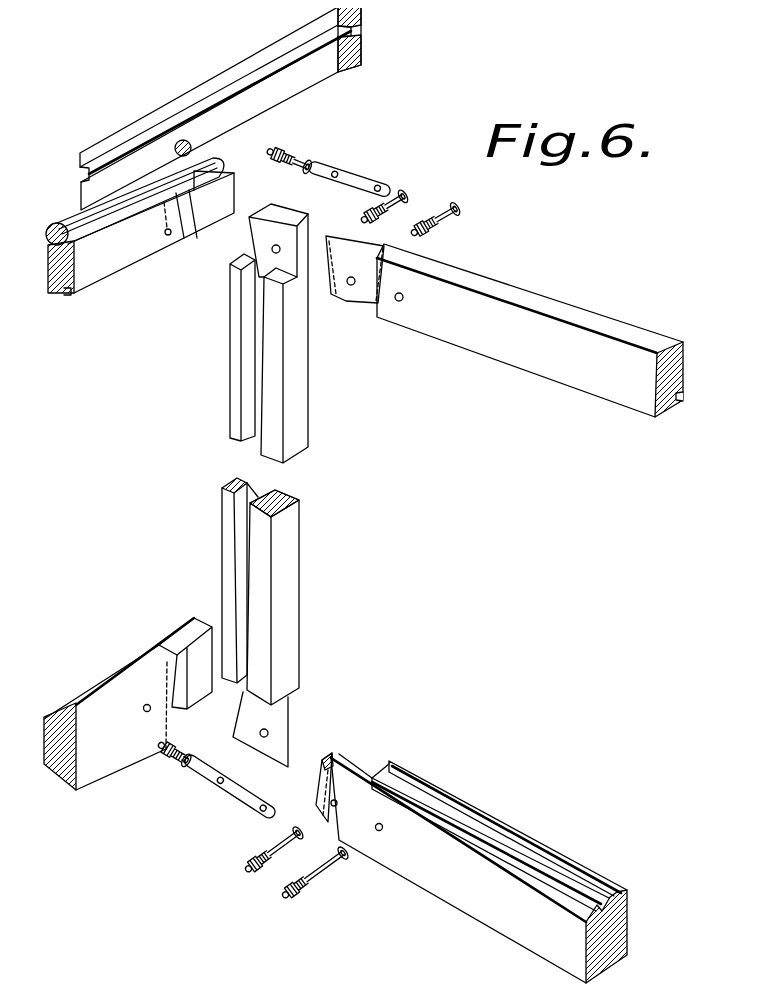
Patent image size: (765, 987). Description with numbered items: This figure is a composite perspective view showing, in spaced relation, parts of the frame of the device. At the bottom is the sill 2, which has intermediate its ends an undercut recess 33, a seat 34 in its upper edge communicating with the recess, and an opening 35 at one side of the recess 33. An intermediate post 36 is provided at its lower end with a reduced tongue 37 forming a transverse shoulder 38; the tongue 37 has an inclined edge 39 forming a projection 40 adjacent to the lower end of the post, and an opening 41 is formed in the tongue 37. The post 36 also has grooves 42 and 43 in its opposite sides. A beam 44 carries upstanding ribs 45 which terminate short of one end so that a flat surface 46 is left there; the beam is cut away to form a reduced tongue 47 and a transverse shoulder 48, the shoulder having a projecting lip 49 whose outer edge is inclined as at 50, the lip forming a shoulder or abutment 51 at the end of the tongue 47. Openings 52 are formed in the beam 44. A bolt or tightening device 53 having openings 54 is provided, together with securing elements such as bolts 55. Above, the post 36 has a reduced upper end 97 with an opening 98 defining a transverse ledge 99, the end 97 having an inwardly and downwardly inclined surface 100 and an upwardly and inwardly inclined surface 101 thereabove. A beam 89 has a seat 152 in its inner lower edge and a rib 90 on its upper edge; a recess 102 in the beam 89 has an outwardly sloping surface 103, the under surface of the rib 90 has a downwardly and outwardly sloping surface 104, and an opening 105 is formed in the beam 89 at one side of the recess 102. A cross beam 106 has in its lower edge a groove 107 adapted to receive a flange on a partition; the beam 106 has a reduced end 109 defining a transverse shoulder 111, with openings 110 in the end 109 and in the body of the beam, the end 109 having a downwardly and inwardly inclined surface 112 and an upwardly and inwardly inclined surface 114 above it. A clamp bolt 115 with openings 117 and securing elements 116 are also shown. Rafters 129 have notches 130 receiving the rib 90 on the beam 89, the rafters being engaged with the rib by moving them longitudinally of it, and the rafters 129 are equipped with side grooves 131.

The sill 2 is at (80, 699).
The undercut recess 33 is at (171, 707).
The seat 34 is at (170, 647).
The opening 35 is at (145, 713).
The intermediate post 36 is at (289, 438).
The reduced tongue 37 is at (320, 716).
The transverse shoulder 38 is at (285, 698).
The inclined edge 39 is at (231, 724).
The projection 40 is at (237, 680).
The opening 41 is at (263, 738).
The groove 42 is at (242, 398).
The groove 43 is at (270, 492).
The beam 44 is at (500, 903).
The upstanding ribs 45 is at (488, 840).
The flat surface 46 is at (361, 772).
The reduced tongue 47 is at (356, 770).
The transverse shoulder 48 is at (389, 765).
The projecting lip 49 is at (338, 755).
The inclined outer edge 50 is at (316, 784).
The shoulder or abutment 51 is at (346, 779).
The openings 52 is at (332, 807).
The bolt or tightening device 53 is at (242, 796).
The openings 54 is at (259, 814).
The bolts 55 is at (310, 877).
The beam 89 is at (120, 248).
The rib 90 is at (53, 241).
The reduced upper end 97 is at (303, 233).
The opening 98 is at (277, 245).
The transverse ledge 99 is at (283, 281).
The inwardly and downwardly inclined surface 100 is at (247, 236).
The upwardly and inwardly inclined surface 101 is at (248, 215).
The recess 102 is at (180, 236).
The outwardly sloping surface 103 is at (186, 231).
The downwardly and outwardly sloping surface 104 is at (223, 174).
The opening 105 is at (163, 232).
The cross beam 106 is at (588, 287).
The groove 107 is at (673, 398).
The reduced end 109 is at (362, 303).
The openings 110 is at (398, 294).
The transverse shoulder 111 is at (410, 240).
The downwardly and inwardly inclined surface 112 is at (322, 299).
The upwardly and inwardly inclined surface 114 is at (362, 220).
The clamp bolt 115 is at (357, 185).
The securing elements 116 is at (441, 212).
The openings 117 is at (391, 193).
The rafters 129 is at (227, 80).
The notches 130 is at (179, 141).
The side grooves 131 is at (288, 60).
The seat 152 is at (68, 297).